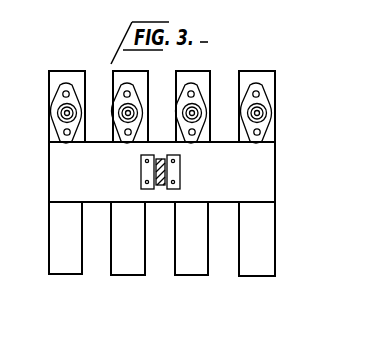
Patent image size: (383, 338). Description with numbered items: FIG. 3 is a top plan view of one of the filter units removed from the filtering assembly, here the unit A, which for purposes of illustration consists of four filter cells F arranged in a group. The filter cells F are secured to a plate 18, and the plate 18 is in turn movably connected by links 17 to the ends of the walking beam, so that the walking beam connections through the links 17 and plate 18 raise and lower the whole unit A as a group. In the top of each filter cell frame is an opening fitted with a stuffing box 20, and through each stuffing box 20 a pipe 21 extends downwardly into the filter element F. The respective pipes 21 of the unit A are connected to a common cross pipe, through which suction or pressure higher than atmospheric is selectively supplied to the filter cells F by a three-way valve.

The link 17 is at (162, 169).
The plate 18 is at (260, 177).
The stuffing box 20 is at (57, 110).
The pipe 21 is at (123, 118).
The filter unit A is at (284, 224).
The filter cell F is at (121, 260).